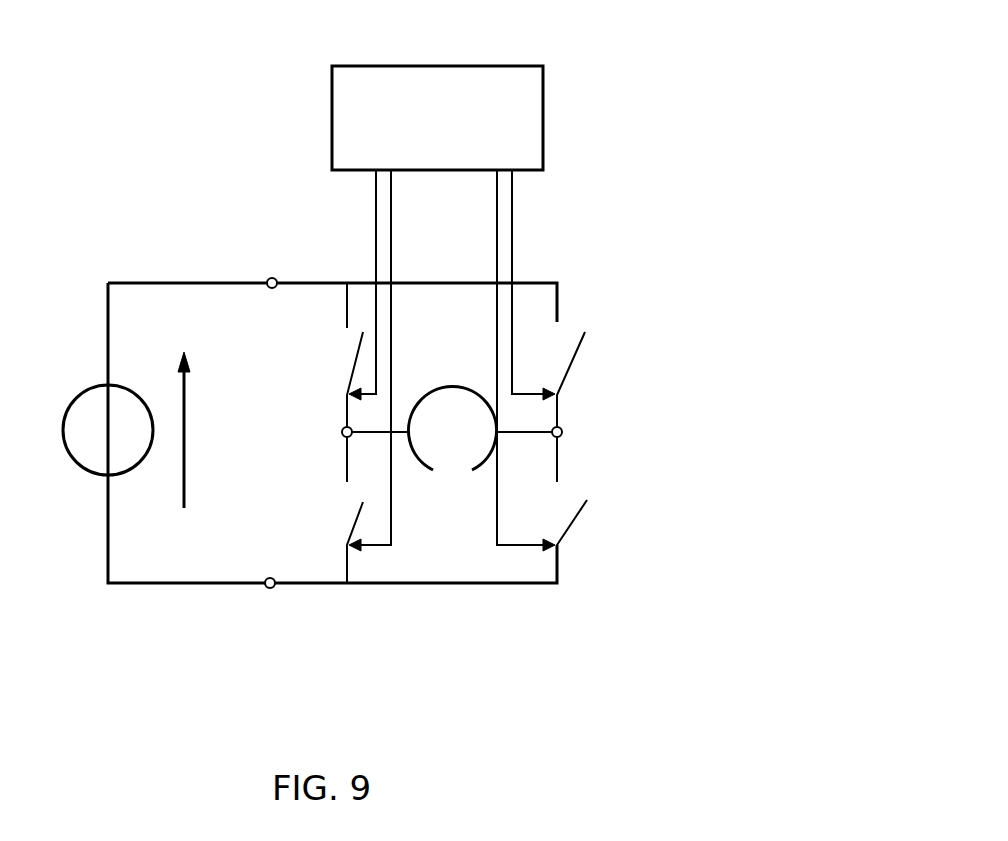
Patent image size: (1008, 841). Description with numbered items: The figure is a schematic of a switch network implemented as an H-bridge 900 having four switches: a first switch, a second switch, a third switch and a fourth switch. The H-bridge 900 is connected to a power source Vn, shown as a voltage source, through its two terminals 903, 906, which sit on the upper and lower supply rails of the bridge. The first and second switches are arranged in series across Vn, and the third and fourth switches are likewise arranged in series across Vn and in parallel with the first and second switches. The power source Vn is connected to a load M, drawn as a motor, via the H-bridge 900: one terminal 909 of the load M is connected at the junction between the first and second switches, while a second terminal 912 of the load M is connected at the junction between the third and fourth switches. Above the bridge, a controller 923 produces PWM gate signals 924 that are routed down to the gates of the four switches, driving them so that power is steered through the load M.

The H-bridge 900 is at (435, 635).
The terminal 903 is at (270, 278).
The terminal 906 is at (266, 588).
The terminal of load 909 is at (343, 436).
The second terminal of load 912 is at (568, 427).
The controller 923 is at (543, 108).
The PWM gate signals 924 is at (389, 222).